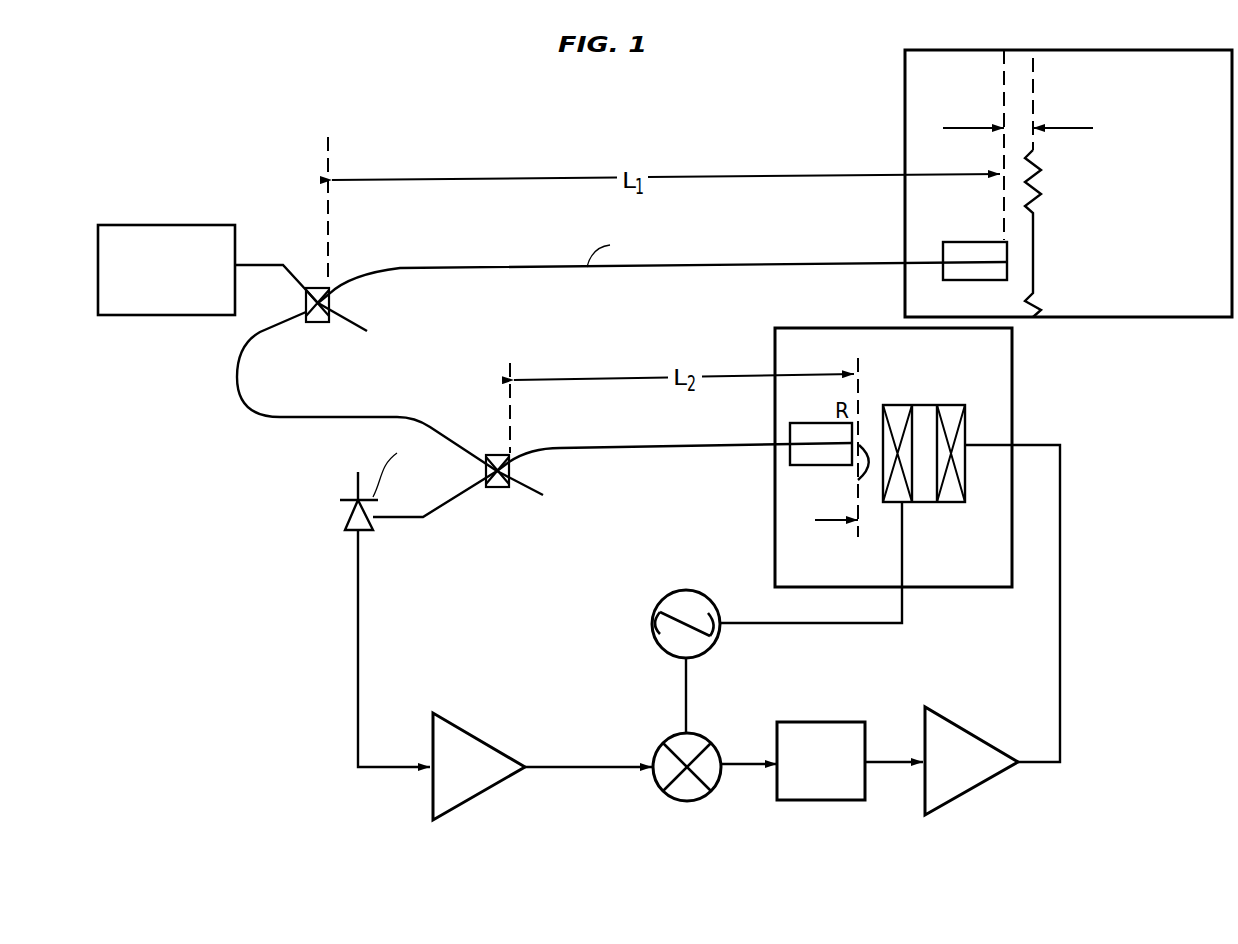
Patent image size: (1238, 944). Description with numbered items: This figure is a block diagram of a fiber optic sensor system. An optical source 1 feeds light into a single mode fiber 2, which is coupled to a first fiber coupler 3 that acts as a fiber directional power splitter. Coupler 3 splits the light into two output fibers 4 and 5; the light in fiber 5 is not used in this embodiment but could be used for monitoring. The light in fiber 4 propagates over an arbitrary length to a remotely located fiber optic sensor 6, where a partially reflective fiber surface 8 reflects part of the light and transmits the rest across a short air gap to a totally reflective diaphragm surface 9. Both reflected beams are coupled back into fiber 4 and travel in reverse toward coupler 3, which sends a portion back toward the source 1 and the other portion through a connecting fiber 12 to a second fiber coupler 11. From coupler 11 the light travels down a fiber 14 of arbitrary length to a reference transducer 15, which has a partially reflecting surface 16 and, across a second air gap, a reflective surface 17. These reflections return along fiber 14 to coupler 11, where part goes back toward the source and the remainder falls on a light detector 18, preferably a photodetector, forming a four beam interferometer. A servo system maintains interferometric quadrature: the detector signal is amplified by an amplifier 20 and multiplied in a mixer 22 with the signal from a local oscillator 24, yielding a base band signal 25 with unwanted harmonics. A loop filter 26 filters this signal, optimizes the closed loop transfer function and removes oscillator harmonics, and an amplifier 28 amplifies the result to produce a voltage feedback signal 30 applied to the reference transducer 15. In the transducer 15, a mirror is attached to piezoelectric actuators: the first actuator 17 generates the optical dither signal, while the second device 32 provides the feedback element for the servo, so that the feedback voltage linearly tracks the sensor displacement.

The optical source 1 is at (183, 225).
The single mode fiber 2 is at (288, 276).
The first fiber coupler 3 is at (313, 323).
The output fiber 4 is at (450, 267).
The output fiber 5 is at (350, 323).
The fiber optic sensor 6 is at (905, 140).
The partially reflective fiber surface 8 is at (1007, 270).
The totally reflective diaphragm surface 9 is at (1033, 285).
The second fiber coupler 11 is at (499, 454).
The connecting fiber 12 is at (422, 420).
The fiber 14 is at (645, 443).
The reference transducer 15 is at (978, 362).
The partially reflecting surface 16 is at (865, 475).
The reflective surface / first actuator 17 is at (883, 477).
The light detector 18 is at (343, 520).
The amplifier 20 is at (457, 725).
The mixer 22 is at (713, 790).
The local oscillator 24 is at (650, 623).
The base band signal 25 is at (743, 760).
The loop filter 26 is at (820, 722).
The amplifier 28 is at (950, 718).
The voltage feedback signal 30 is at (1060, 660).
The second device / piezoelectric actuator 32 is at (953, 502).